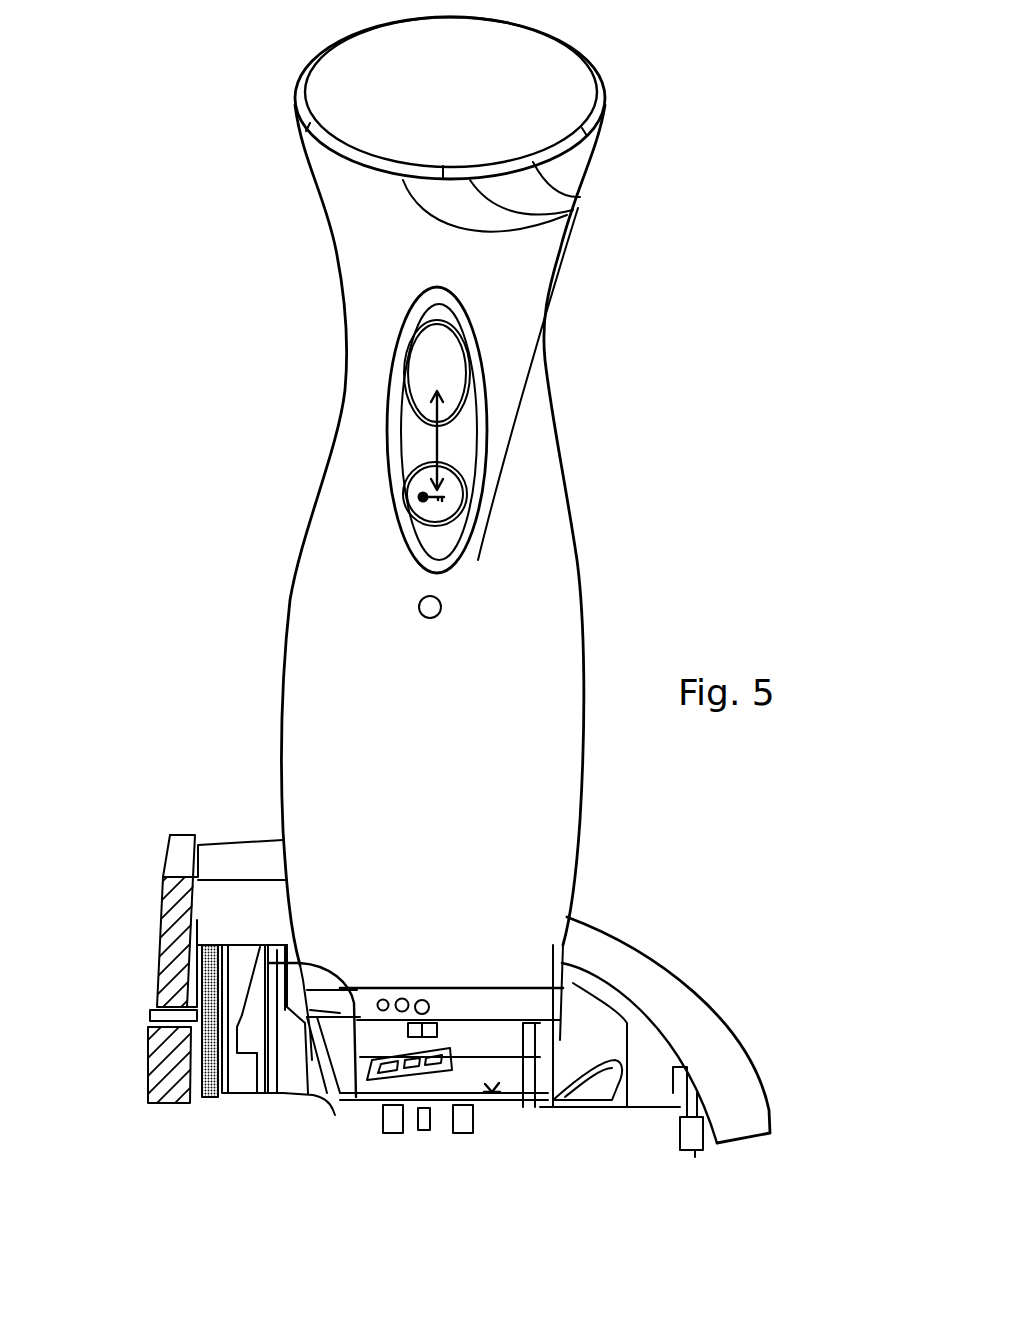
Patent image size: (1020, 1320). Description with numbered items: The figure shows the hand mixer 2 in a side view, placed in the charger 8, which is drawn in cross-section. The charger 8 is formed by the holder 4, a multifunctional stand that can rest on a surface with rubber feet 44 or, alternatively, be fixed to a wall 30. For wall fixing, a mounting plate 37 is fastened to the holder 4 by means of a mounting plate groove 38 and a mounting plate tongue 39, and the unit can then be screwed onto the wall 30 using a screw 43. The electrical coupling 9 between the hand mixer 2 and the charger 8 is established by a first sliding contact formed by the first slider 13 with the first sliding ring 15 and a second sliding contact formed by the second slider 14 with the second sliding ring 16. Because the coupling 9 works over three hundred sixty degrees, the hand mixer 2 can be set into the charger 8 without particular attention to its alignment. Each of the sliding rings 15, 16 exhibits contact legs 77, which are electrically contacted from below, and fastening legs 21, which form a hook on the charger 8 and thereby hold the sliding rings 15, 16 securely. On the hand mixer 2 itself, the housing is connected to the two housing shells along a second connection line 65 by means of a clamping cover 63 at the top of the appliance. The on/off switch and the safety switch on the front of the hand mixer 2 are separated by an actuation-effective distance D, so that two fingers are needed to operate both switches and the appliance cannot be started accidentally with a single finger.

The hand mixer 2 is at (560, 543).
The clamping cover 63 is at (560, 100).
The second connection line 65 is at (570, 200).
The actuation-effective distance D is at (437, 443).
The holder 4 is at (223, 857).
The mounting plate groove 38 is at (190, 908).
The mounting plate tongue 39 is at (197, 947).
The second slider 14 is at (300, 963).
The screw 43 is at (150, 1016).
The wall 30 is at (153, 1047).
The mounting plate 37 is at (192, 1103).
The electrical coupling 9 is at (314, 1117).
The second sliding ring 16 is at (367, 1106).
The contact legs 77 is at (380, 1115).
The fastening legs 21 is at (478, 1115).
The first sliding ring 15 is at (490, 1115).
The first slider 13 is at (492, 1090).
The charger 8 is at (703, 1023).
The rubber feet 44 is at (700, 1148).